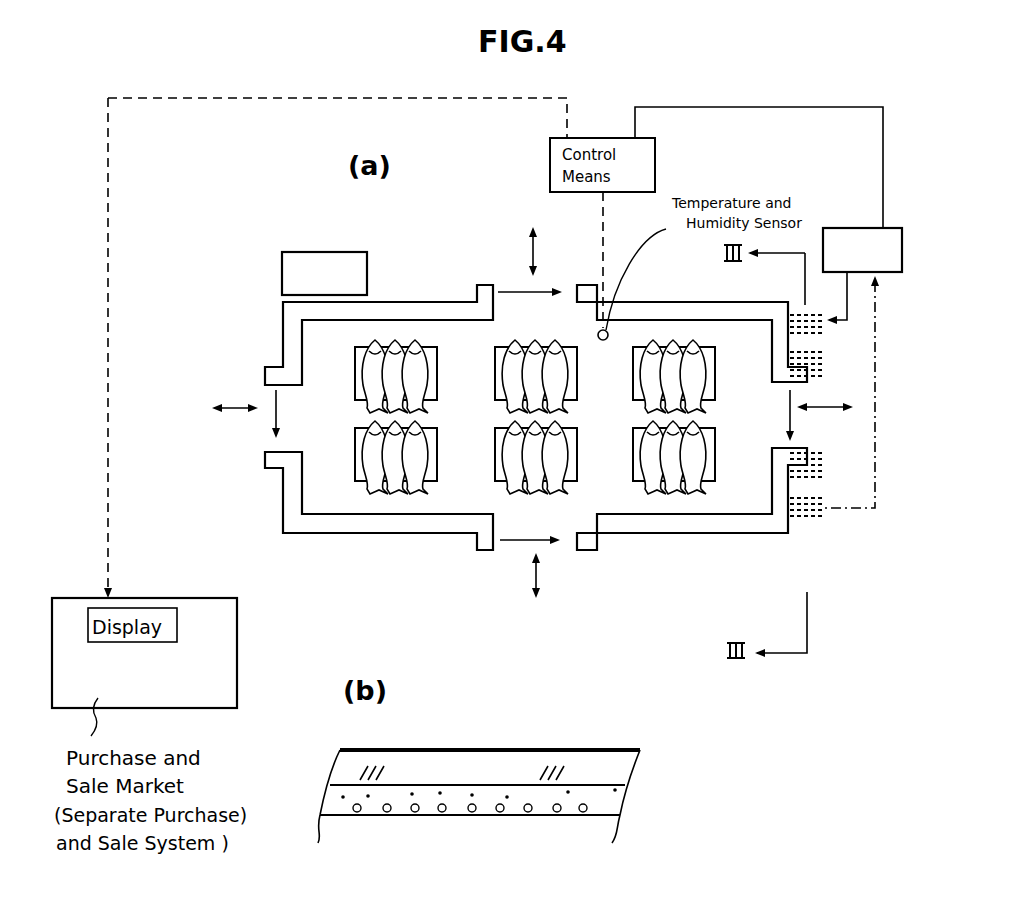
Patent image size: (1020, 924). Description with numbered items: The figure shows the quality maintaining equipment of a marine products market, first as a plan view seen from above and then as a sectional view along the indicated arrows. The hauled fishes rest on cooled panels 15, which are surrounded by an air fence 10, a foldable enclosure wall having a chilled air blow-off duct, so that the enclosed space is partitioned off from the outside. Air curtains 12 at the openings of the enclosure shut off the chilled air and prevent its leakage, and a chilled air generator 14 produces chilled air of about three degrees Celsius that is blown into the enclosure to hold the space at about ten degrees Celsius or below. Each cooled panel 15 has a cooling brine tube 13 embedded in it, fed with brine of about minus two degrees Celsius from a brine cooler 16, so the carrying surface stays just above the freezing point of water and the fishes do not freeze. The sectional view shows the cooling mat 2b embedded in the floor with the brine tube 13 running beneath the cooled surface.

The air fence 10 is at (679, 305).
The air curtain 12 is at (510, 542).
The cooling brine tube 13 is at (806, 520).
The chilled air generator 14 is at (322, 261).
The cooled panel 15 is at (578, 384).
The brine cooler 16 is at (853, 231).
The cooling mat 2b is at (657, 781).